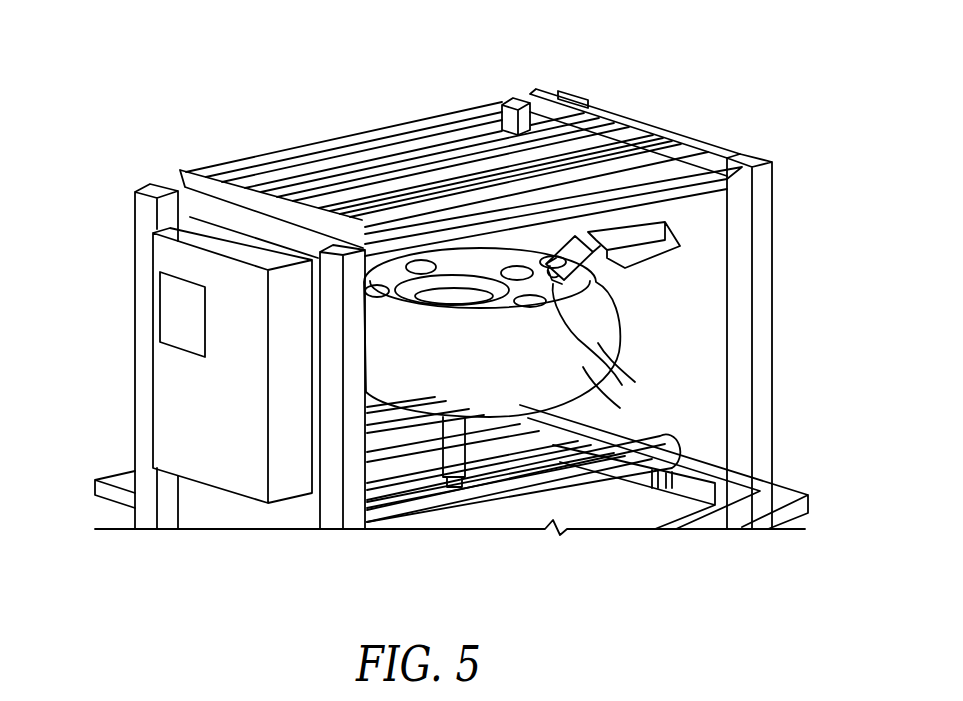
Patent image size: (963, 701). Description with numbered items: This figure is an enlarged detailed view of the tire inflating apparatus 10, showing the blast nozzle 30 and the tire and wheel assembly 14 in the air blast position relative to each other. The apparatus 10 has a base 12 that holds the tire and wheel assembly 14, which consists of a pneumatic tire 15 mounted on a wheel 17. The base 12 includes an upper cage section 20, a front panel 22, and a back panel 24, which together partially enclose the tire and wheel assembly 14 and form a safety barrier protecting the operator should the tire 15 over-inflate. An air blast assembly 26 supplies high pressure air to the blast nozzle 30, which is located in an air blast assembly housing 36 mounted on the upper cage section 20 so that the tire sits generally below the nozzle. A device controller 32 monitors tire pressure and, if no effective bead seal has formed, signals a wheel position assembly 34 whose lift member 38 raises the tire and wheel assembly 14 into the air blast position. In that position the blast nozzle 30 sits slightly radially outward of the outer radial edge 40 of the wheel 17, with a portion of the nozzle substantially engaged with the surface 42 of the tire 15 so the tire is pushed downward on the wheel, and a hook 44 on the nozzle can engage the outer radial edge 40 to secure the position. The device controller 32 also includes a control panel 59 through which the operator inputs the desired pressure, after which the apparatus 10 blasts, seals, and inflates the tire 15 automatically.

The apparatus 10 is at (162, 72).
The base 12 is at (145, 482).
The tire and wheel assembly 14 is at (583, 377).
The pneumatic tire 15 is at (600, 353).
The wheel 17 is at (488, 262).
The upper cage section 20 is at (402, 132).
The front panel 22 is at (190, 201).
The back panel 24 is at (765, 200).
The air blast assembly 26 is at (597, 128).
The blast nozzle 30 is at (585, 258).
The device controller 32 is at (180, 378).
The wheel position assembly 34 is at (457, 425).
The air blast assembly housing 36 is at (640, 227).
The lift member 38 is at (453, 453).
The outer radial edge 40 is at (555, 306).
The surface 42 is at (525, 248).
The hook 44 is at (560, 296).
The control panel 59 is at (180, 304).